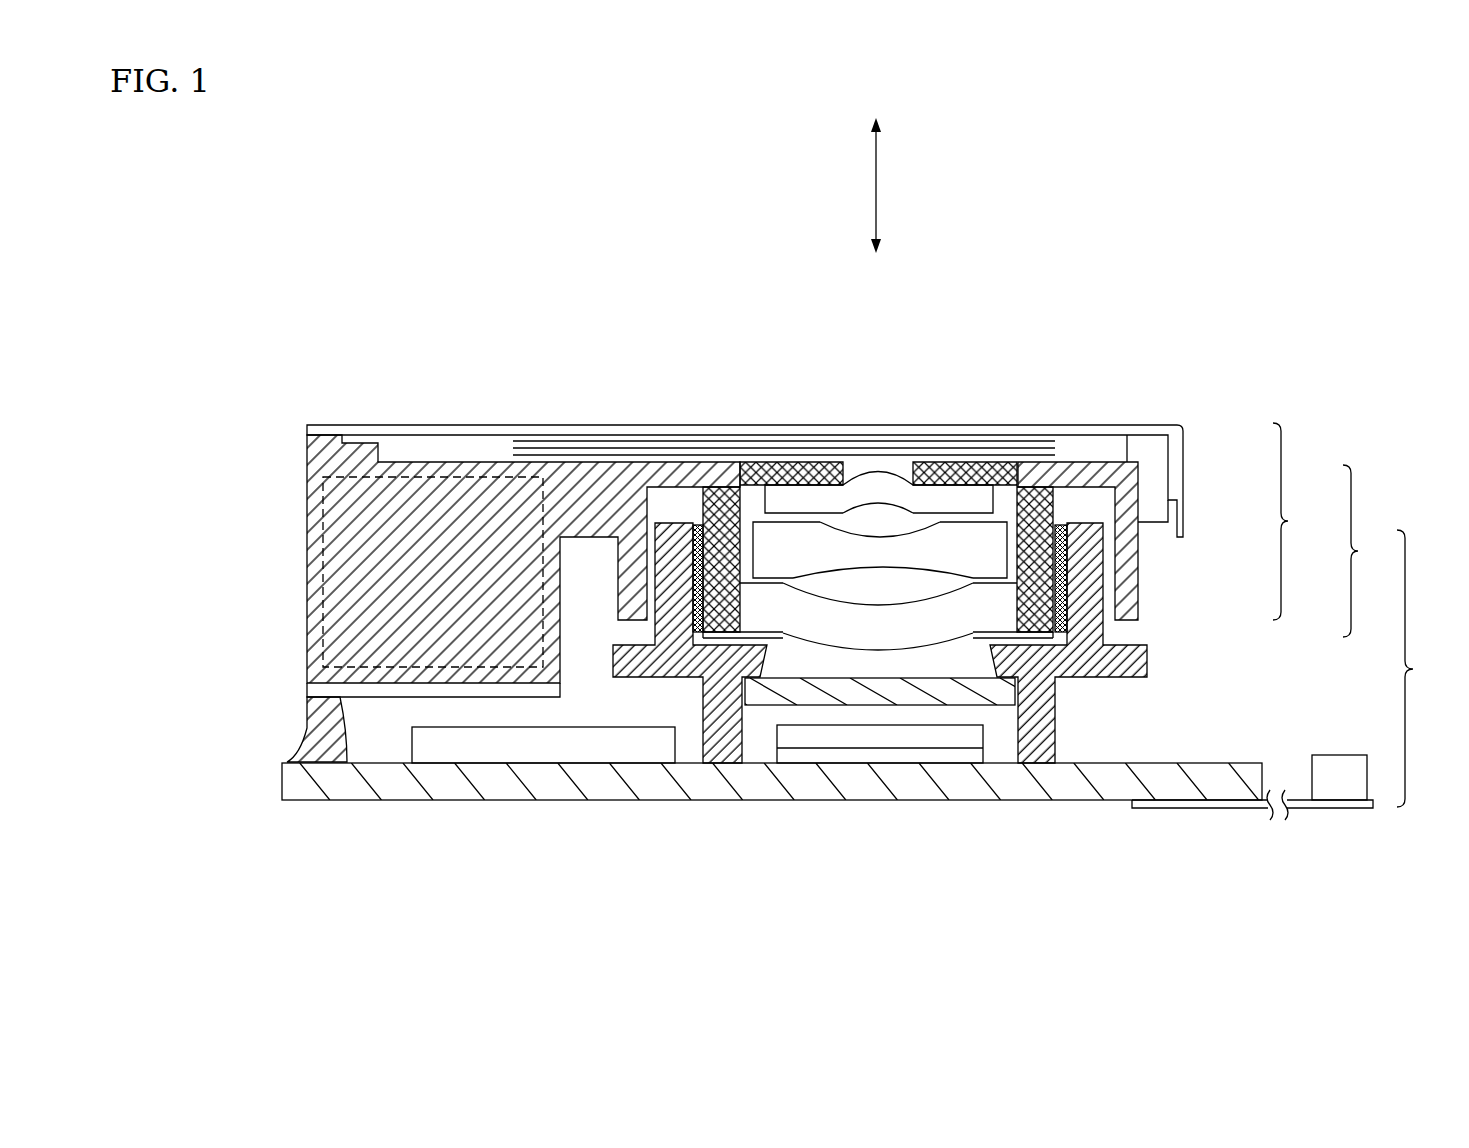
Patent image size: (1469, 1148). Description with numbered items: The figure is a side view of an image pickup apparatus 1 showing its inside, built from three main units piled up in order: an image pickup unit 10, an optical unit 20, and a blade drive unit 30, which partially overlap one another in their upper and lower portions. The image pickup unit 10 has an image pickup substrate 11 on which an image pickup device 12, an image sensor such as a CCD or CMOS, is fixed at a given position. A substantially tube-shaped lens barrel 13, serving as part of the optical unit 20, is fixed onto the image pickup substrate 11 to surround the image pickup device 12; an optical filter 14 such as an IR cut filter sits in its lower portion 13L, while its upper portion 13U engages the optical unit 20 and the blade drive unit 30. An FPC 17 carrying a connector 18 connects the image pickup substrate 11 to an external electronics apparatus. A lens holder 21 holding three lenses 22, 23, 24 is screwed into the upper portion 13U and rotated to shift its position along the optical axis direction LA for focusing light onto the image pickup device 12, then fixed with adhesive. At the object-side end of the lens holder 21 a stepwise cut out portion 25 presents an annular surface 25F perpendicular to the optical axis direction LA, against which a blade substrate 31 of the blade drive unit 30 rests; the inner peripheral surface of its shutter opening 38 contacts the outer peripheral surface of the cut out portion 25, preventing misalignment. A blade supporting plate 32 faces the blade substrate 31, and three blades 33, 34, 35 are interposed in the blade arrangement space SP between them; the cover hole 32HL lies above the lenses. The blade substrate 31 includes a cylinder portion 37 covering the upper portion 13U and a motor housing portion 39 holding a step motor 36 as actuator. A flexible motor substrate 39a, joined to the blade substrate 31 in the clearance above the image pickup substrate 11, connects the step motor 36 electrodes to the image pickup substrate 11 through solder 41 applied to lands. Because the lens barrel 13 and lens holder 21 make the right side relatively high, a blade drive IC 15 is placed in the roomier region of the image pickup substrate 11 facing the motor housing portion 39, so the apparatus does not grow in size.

The image pickup apparatus 1 is at (613, 250).
The optical axis direction LA is at (876, 185).
The image pickup unit 10 is at (1423, 668).
The image pickup substrate 11 is at (977, 793).
The image pickup device 12 is at (867, 755).
The lens barrel 13 is at (628, 667).
The upper portion of the lens barrel 13U is at (1107, 627).
The lower portion of the lens barrel 13L is at (1058, 727).
The optical filter 14 is at (1010, 690).
The blade drive IC 15 is at (460, 748).
The FPC 17 is at (1233, 808).
The connector 18 is at (1340, 783).
The optical unit 20 is at (1370, 551).
The lens holder 21 is at (1062, 582).
The lens 22 is at (773, 465).
The lens 23 is at (820, 540).
The lens 24 is at (972, 603).
The cut out portion 25 is at (687, 467).
The annular surface 25F is at (1057, 460).
The blade drive unit 30 is at (1301, 521).
The blade substrate 31 is at (307, 447).
The blade supporting plate 32 is at (405, 437).
The cover hole 32HL is at (917, 427).
The blade 33 is at (537, 457).
The blade 34 is at (570, 447).
The blade 35 is at (607, 443).
The step motor 36 is at (307, 523).
The cylinder portion 37 is at (1123, 540).
The shutter opening 38 is at (753, 467).
The motor housing portion 39 is at (310, 652).
The motor substrate 39a is at (310, 688).
The solder 41 is at (310, 727).
The blade arrangement space SP is at (448, 447).